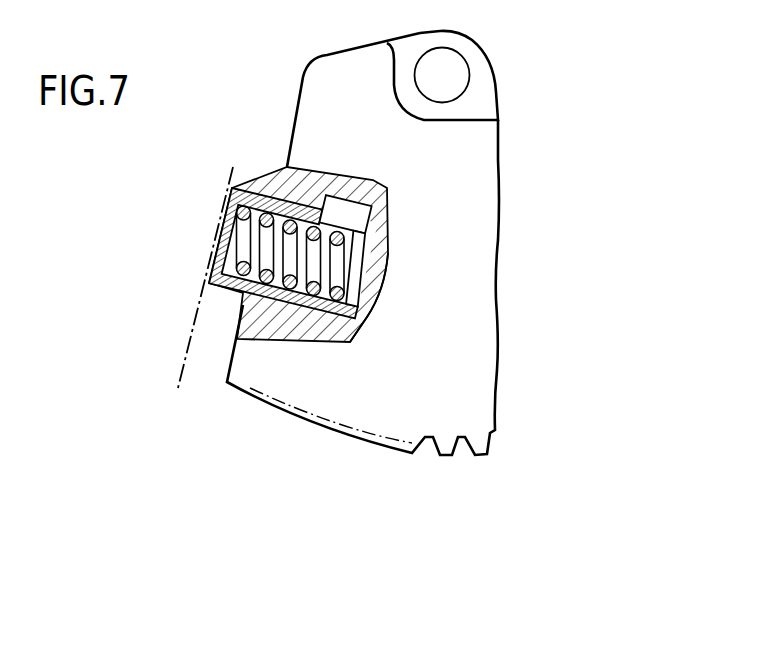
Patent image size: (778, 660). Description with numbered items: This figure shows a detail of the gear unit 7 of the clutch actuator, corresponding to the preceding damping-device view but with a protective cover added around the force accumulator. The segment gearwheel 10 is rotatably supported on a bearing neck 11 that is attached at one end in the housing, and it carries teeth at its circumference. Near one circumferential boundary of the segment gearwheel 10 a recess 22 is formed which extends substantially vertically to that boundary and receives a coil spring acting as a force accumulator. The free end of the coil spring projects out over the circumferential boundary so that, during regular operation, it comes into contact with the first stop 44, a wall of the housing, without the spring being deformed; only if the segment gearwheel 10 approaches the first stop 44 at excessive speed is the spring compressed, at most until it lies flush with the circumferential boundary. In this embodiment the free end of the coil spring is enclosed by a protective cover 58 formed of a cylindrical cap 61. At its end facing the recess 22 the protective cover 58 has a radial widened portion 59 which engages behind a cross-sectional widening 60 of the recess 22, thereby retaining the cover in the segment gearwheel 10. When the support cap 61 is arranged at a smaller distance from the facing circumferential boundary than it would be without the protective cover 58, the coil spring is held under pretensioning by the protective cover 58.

The gear unit 7 is at (540, 348).
The segment gearwheel 10 is at (473, 232).
The bearing neck 11 is at (452, 63).
The recess 22 is at (354, 215).
The first stop 44 is at (185, 355).
The protective cover 58 is at (252, 192).
The radial widened portion 59 is at (297, 313).
The cross-sectional widening 60 is at (330, 318).
The cylindrical cap 61 is at (223, 227).